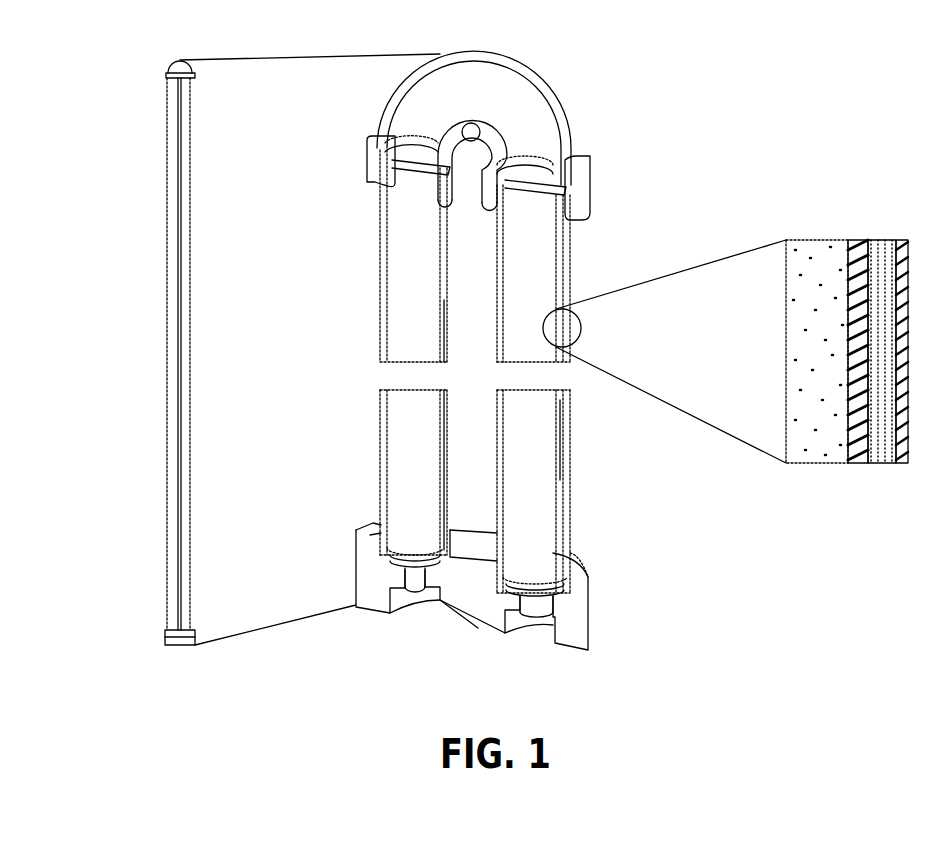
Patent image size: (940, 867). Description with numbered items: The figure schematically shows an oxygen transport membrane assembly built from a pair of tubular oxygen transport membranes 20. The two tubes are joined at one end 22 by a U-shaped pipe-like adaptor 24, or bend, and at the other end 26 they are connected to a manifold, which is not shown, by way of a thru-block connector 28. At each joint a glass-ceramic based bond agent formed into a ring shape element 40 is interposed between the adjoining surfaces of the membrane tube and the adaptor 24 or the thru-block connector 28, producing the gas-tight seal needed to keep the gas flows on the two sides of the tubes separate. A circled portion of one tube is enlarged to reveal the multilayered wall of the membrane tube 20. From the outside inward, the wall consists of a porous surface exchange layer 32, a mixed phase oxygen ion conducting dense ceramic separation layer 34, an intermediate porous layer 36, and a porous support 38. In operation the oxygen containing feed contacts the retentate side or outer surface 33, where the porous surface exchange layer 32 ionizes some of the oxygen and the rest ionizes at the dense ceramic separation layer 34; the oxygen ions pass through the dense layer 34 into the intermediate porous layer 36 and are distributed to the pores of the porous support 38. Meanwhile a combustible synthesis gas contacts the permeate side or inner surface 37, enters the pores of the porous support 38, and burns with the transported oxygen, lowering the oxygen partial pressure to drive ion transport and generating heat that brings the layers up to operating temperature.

The tubular oxygen transport membrane 20 is at (138, 210).
The one end 22 is at (210, 354).
The U-shaped pipe-like adaptor 24 is at (374, 124).
The other end 26 is at (149, 632).
The thru-block connector 28 is at (420, 606).
The porous surface exchange layer 32 is at (906, 385).
The retentate side or outer surface 33 is at (386, 500).
The dense ceramic separation layer 34 is at (875, 331).
The intermediate porous layer 36 is at (856, 385).
The permeate side or inner surface 37 is at (476, 371).
The porous support 38 is at (817, 331).
The ring shape element 40 is at (484, 413).